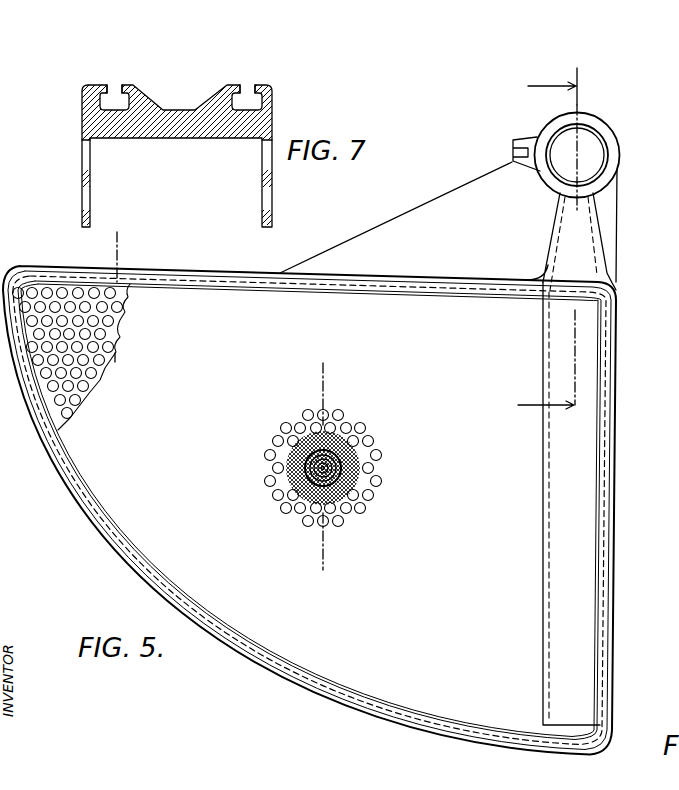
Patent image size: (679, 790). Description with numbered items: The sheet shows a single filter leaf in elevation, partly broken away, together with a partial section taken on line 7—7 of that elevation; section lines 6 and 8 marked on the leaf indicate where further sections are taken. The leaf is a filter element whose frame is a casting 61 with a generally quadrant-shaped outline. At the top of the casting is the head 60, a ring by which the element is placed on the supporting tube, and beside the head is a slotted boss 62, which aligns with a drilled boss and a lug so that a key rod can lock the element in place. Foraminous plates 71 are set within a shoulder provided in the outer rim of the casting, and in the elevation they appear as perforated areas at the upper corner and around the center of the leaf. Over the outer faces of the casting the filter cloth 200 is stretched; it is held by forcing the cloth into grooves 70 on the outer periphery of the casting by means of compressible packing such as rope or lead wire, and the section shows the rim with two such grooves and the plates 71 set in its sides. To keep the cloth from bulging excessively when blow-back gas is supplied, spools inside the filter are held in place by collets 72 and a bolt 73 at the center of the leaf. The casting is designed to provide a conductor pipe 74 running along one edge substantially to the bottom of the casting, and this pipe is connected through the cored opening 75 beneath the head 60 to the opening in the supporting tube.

In FIG. 5, the section line 6- 6 is at (546, 235).
In FIG. 5, the section line 7— 7 is at (123, 306).
In FIG. 5, the section line 8- 8 is at (335, 467).
In FIG. 5, the head 60 is at (612, 129).
In FIG. 7, the casting 61 is at (173, 93).
In FIG. 5, the casting 61 is at (614, 470).
In FIG. 5, the slotted boss 62 is at (517, 139).
In FIG. 7, the grooves 70 is at (115, 88).
In FIG. 7, the foraminous plates 71 is at (82, 175).
In FIG. 5, the foraminous plates 71 is at (126, 316).
In FIG. 5, the collets 72 is at (306, 475).
In FIG. 5, the bolt 73 is at (318, 482).
In FIG. 5, the conductor pipe 74 is at (545, 512).
In FIG. 5, the cored opening 75 is at (590, 240).
In FIG. 5, the filter cloth 200 is at (346, 446).